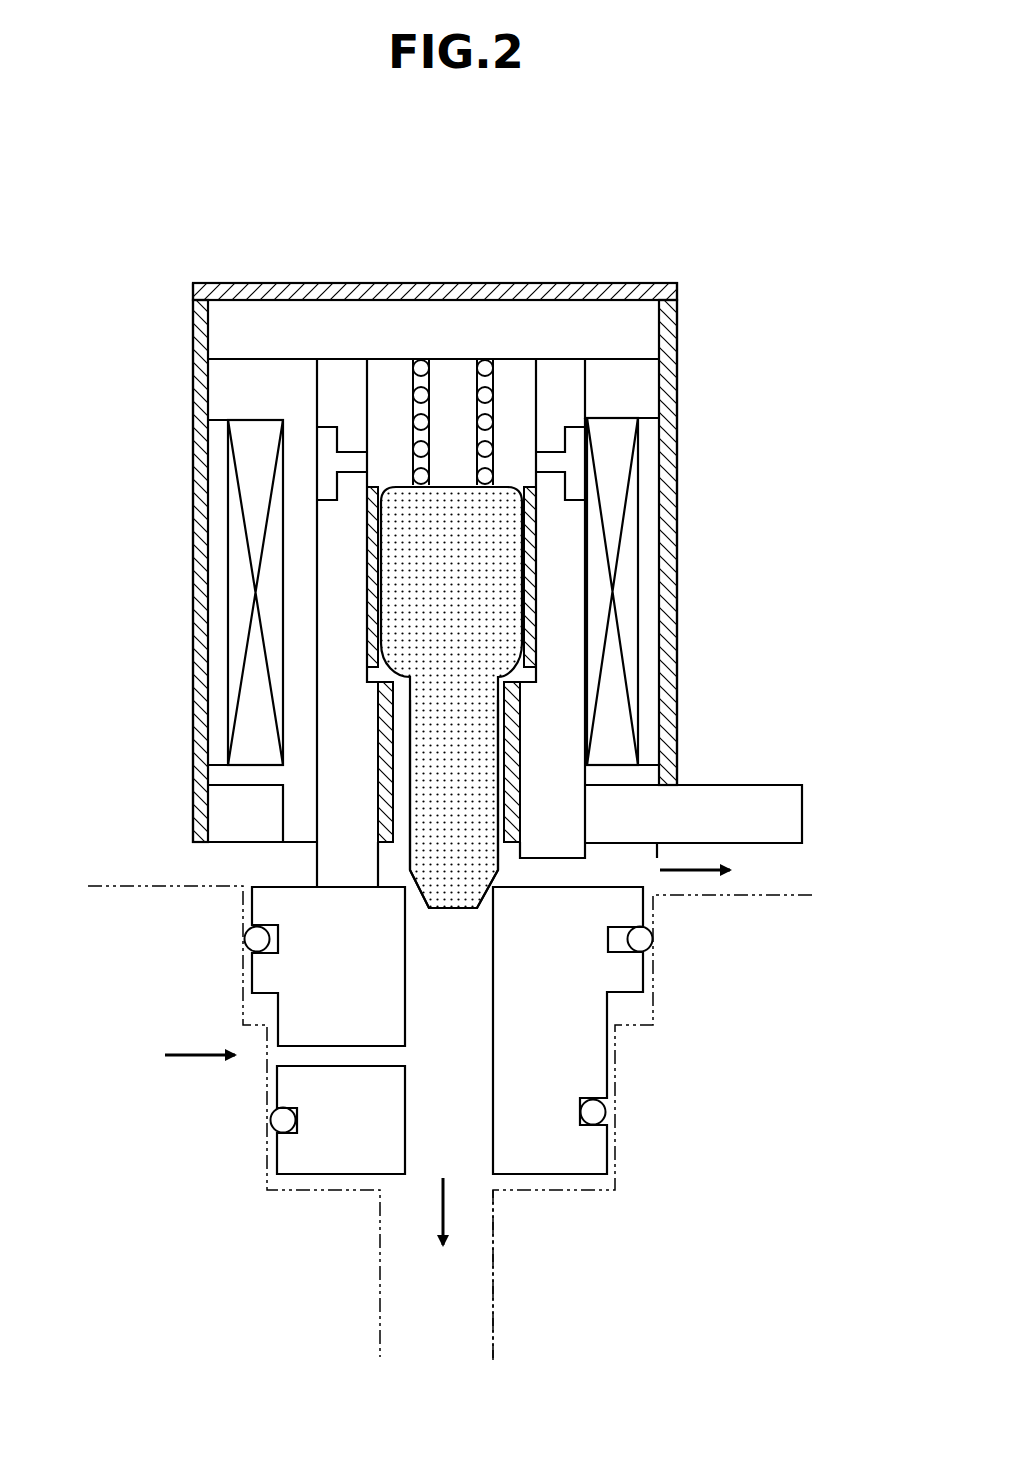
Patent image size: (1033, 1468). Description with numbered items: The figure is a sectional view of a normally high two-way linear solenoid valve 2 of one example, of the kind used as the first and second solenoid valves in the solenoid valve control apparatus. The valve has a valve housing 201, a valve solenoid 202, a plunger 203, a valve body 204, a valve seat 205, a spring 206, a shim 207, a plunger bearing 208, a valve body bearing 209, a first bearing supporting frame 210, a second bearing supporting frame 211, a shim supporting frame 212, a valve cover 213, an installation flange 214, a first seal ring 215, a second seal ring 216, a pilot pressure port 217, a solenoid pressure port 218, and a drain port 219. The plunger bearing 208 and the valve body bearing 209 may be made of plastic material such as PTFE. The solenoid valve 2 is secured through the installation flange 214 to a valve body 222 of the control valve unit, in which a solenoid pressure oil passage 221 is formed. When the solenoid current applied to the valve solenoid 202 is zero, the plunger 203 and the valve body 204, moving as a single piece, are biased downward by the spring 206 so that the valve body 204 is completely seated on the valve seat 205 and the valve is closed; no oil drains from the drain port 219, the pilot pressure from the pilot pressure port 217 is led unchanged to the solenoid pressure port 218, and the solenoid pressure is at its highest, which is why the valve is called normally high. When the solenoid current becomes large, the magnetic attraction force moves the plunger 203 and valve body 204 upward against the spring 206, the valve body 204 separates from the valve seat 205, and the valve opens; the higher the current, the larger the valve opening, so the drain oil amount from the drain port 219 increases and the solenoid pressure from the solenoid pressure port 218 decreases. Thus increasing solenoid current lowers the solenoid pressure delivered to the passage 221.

The normally high two-way linear solenoid valve 2 is at (158, 207).
The valve housing 201 is at (578, 1070).
The valve solenoid 202 is at (228, 482).
The plunger 203 is at (435, 632).
The valve body 204 is at (450, 805).
The valve seat 205 is at (494, 890).
The spring 206 is at (418, 388).
The shim 207 is at (418, 318).
The plunger bearing 208 is at (530, 567).
The valve body bearing 209 is at (385, 760).
The first bearing supporting frame 210 is at (550, 712).
The second bearing supporting frame 211 is at (575, 458).
The shim supporting frame 212 is at (567, 377).
The valve cover 213 is at (678, 345).
The installation flange 214 is at (738, 803).
The first seal ring 215 is at (593, 1112).
The second seal ring 216 is at (655, 950).
The pilot pressure port 217 is at (330, 1053).
The solenoid pressure port 218 is at (445, 1135).
The drain port 219 is at (602, 872).
The solenoid pressure oil passage 221 is at (495, 1203).
The valve body 222 is at (140, 882).